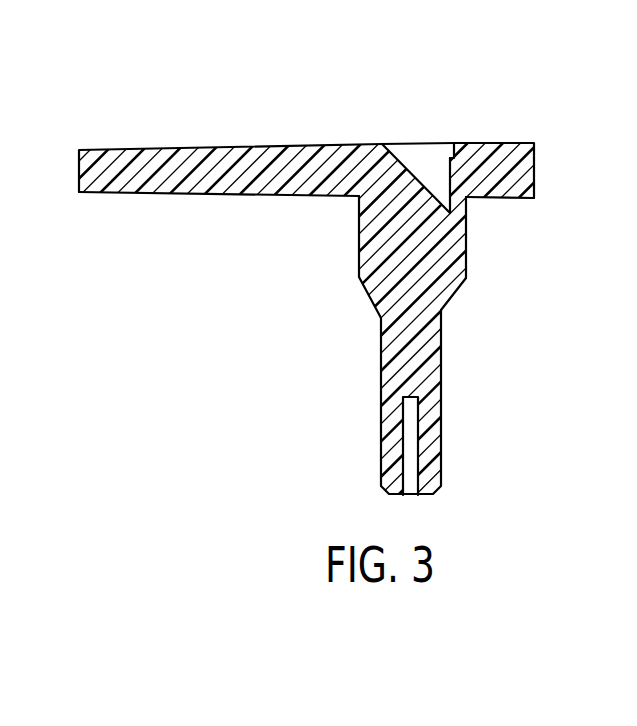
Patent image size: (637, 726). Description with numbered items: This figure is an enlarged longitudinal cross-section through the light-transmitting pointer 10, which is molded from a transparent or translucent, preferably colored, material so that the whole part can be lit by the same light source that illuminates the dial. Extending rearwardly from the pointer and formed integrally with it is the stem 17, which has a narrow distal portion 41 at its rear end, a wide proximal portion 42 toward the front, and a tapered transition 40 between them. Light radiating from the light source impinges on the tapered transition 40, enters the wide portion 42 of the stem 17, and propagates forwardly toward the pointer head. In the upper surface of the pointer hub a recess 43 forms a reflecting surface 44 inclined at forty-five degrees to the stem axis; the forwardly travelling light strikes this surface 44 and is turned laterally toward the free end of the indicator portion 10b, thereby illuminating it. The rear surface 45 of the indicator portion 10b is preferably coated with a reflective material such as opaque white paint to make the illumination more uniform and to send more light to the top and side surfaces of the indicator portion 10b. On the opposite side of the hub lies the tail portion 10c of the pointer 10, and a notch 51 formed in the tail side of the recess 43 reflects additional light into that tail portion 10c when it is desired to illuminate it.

The light-transmitting pointer 10 is at (287, 88).
The indicator portion 10b is at (143, 148).
The tail portion 10c is at (512, 144).
The rear surface 45 is at (202, 195).
The reflecting surface 44 is at (391, 146).
The recess 43 is at (418, 152).
The notch 51 is at (458, 147).
The wide proximal portion 42 is at (467, 233).
The tapered transition 40 is at (454, 298).
The stem 17 is at (333, 358).
The narrow distal portion 41 is at (442, 428).